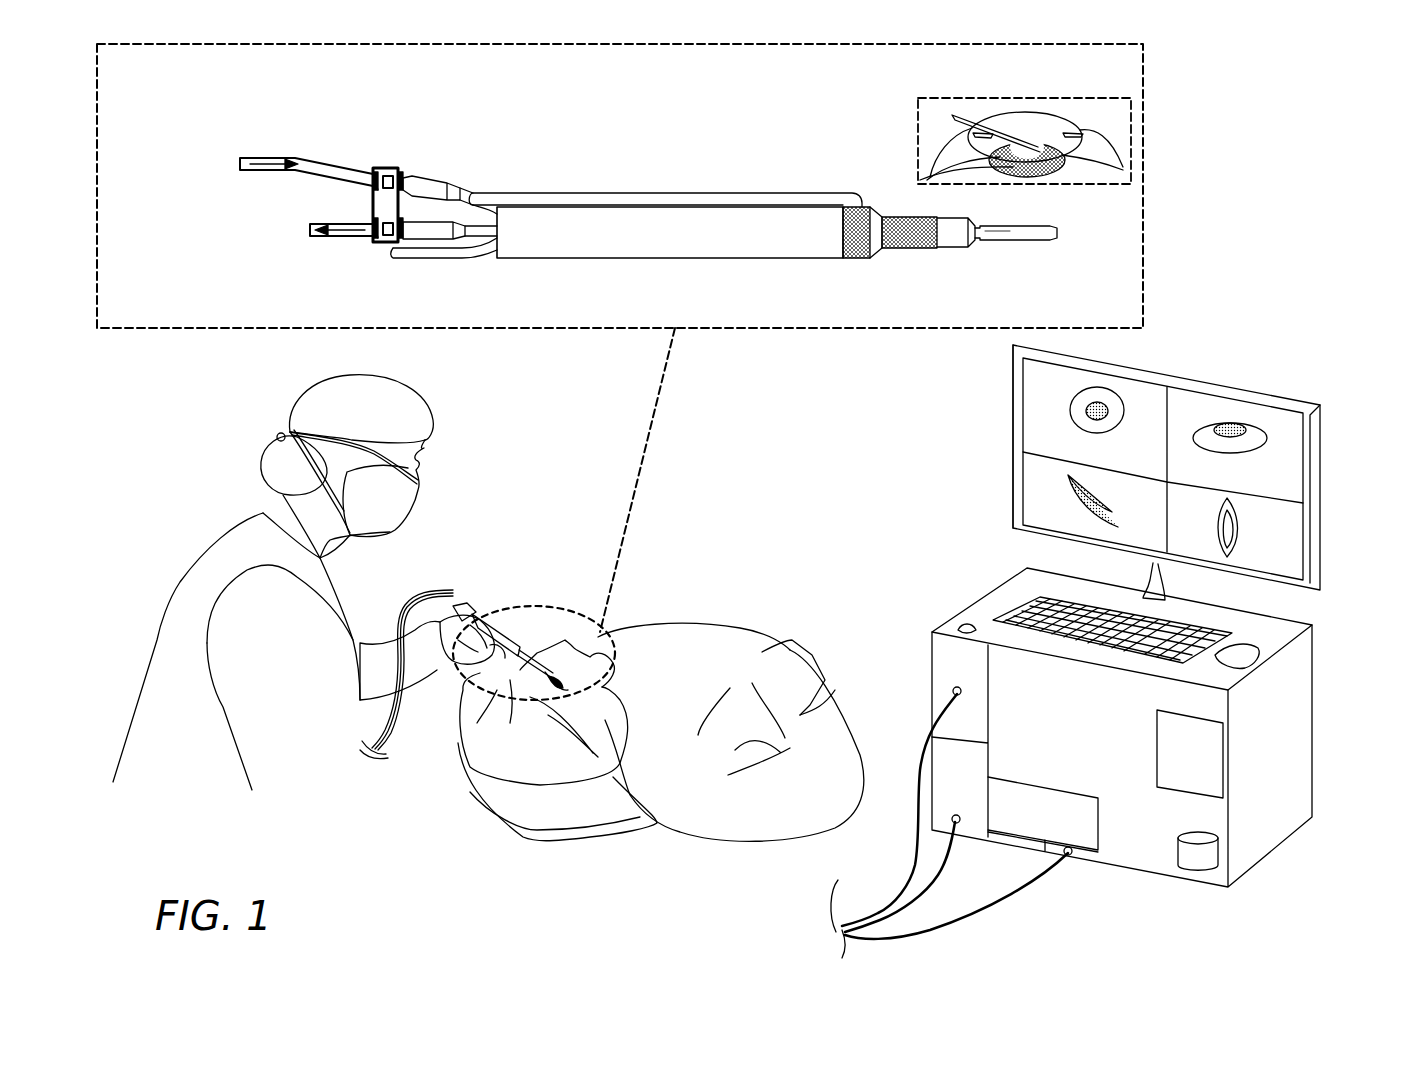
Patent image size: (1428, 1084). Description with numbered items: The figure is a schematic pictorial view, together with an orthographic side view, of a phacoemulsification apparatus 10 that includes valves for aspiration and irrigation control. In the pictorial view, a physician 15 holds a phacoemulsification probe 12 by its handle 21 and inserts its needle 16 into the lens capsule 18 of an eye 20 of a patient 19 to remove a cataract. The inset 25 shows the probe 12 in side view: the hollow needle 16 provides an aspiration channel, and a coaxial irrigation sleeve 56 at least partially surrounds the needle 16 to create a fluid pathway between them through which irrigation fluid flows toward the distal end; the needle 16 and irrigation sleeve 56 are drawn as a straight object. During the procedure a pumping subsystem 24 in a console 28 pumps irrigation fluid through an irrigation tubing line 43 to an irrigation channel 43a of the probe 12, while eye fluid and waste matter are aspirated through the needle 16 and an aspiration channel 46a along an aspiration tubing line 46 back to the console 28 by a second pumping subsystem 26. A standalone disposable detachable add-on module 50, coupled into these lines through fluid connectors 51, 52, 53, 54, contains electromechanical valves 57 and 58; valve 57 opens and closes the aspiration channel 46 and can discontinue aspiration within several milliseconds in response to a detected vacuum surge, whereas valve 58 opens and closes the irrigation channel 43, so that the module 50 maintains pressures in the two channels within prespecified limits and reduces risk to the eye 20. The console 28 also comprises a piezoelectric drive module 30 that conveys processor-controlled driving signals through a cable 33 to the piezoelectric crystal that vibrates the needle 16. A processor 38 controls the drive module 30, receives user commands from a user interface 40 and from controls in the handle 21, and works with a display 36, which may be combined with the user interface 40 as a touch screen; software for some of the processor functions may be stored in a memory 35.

The phacoemulsification apparatus 10 is at (1337, 375).
The phacoemulsification probe 12 is at (516, 590).
The physician 15 is at (288, 400).
The needle 16 is at (1057, 230).
The lens capsule 18 is at (920, 181).
The patient 19 is at (541, 785).
The eye 20 is at (993, 120).
The handle 21 is at (470, 600).
The pumping subsystem 24 is at (960, 741).
The inset 25 is at (620, 186).
The pumping subsystem 26 is at (960, 791).
The console 28 is at (1275, 832).
The piezoelectric drive module 30 is at (1043, 816).
The cable 33 is at (462, 260).
The memory 35 is at (1203, 870).
The display 36 is at (1013, 463).
The processor 38 is at (1190, 754).
The user interface 40 is at (975, 588).
The irrigation tubing line 43 is at (325, 160).
The irrigation channel 43a is at (567, 193).
The aspiration tubing line 46 is at (346, 240).
The aspiration channel 46a is at (474, 212).
The add-on module 50 is at (373, 205).
The fluid connector 51 is at (410, 243).
The fluid connector 52 is at (407, 178).
The fluid connector 53 is at (380, 243).
The fluid connector 54 is at (373, 174).
The irrigation sleeve 56 is at (1015, 240).
The valve 57 is at (388, 237).
The valve 58 is at (388, 174).